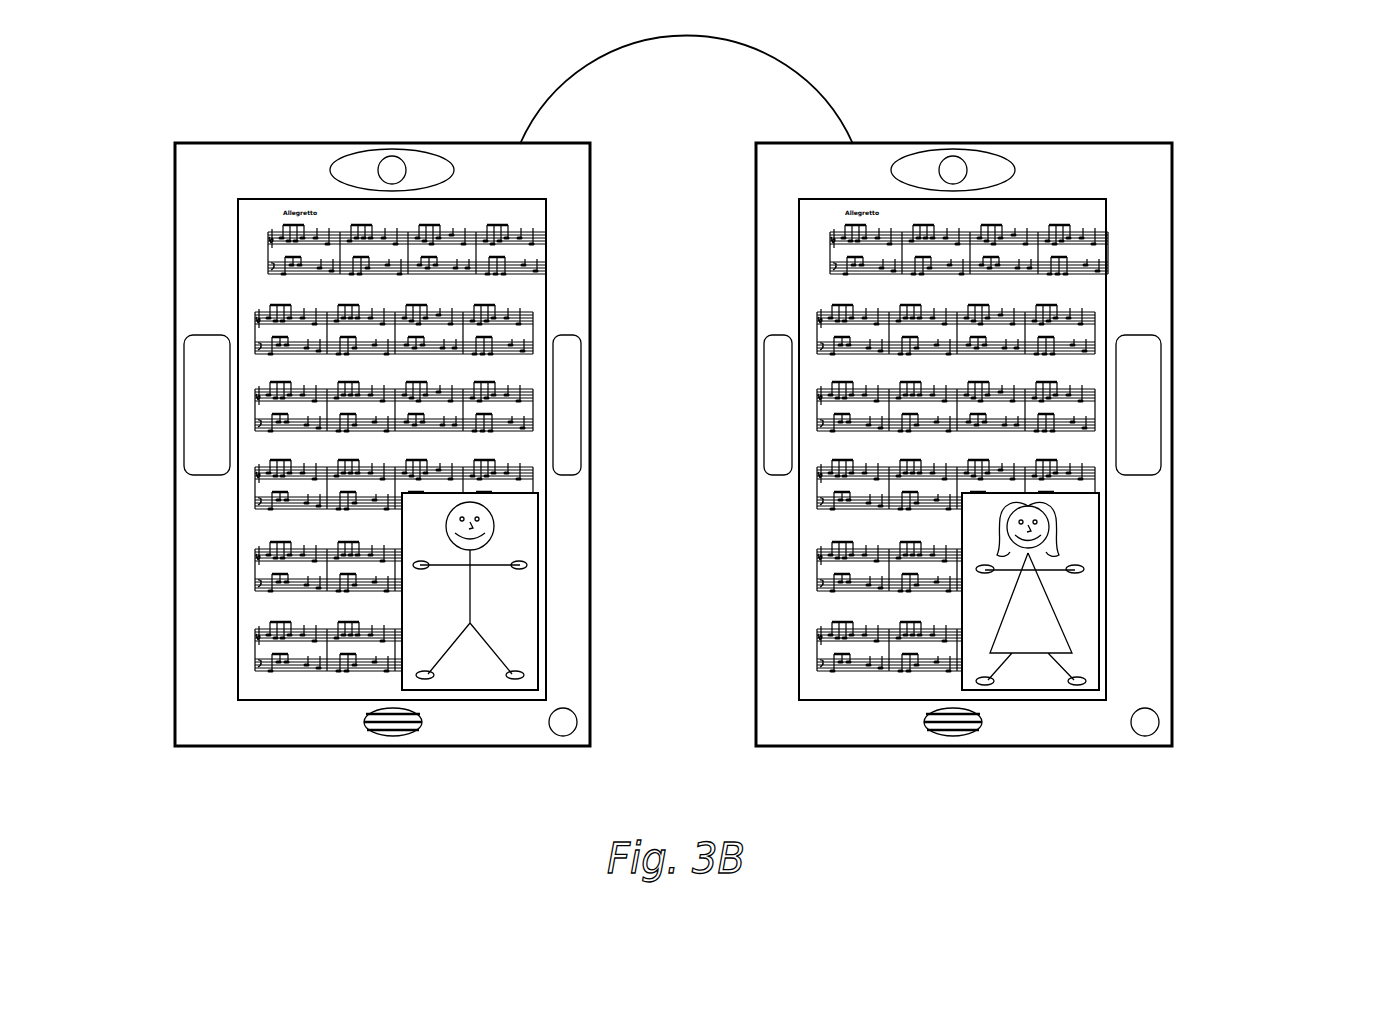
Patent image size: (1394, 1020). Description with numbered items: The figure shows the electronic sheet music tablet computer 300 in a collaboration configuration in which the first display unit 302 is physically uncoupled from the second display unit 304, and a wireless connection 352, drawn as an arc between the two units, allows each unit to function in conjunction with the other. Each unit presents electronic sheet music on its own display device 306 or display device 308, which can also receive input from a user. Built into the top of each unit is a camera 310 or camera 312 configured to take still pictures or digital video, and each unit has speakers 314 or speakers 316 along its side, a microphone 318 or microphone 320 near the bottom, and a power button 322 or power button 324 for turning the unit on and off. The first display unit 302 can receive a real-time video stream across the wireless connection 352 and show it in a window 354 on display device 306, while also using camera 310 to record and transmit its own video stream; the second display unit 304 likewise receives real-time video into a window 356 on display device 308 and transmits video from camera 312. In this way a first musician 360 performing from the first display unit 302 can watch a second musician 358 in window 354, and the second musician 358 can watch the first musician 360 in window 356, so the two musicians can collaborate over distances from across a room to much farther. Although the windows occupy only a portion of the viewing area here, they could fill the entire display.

The tablet computer 300 is at (1217, 196).
The first display unit 302 is at (165, 525).
The second display unit 304 is at (1187, 668).
The display device 306 is at (274, 682).
The display device 308 is at (872, 683).
The camera 310 is at (392, 170).
The camera 312 is at (953, 170).
The speakers 314 is at (206, 348).
The speakers 316 is at (1138, 352).
The microphone 318 is at (393, 738).
The microphone 320 is at (953, 738).
The power button 322 is at (563, 736).
The power button 324 is at (1145, 736).
The wireless connection 352 is at (773, 62).
The window 354 is at (517, 600).
The window 356 is at (1080, 602).
The second musician 358 is at (494, 527).
The first musician 360 is at (1058, 523).